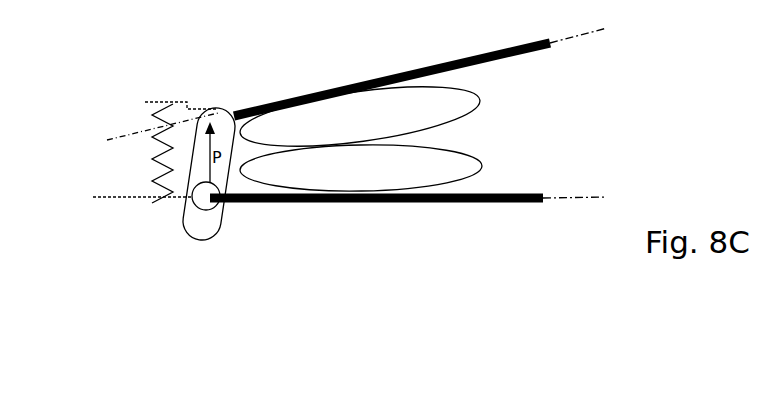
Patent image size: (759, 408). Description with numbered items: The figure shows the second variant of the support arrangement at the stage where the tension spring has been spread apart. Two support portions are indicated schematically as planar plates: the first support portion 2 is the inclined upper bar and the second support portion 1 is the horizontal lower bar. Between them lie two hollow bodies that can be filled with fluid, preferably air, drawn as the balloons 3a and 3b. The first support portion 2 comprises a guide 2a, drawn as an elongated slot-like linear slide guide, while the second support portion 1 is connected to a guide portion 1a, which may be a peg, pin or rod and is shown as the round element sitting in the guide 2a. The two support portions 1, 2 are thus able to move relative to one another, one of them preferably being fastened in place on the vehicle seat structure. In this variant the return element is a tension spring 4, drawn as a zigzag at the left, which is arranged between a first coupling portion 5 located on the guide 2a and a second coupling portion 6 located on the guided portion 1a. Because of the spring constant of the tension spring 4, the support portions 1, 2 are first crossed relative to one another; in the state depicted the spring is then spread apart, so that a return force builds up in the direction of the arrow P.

The second support portion 1 is at (432, 203).
The guide portion 1a is at (207, 200).
The first support portion 2 is at (430, 64).
The guide 2a is at (218, 108).
The balloon 3a is at (482, 100).
The balloon 3b is at (484, 168).
The tension spring 4 is at (162, 128).
The first coupling portion 5 is at (150, 102).
The second coupling portion 6 is at (157, 203).